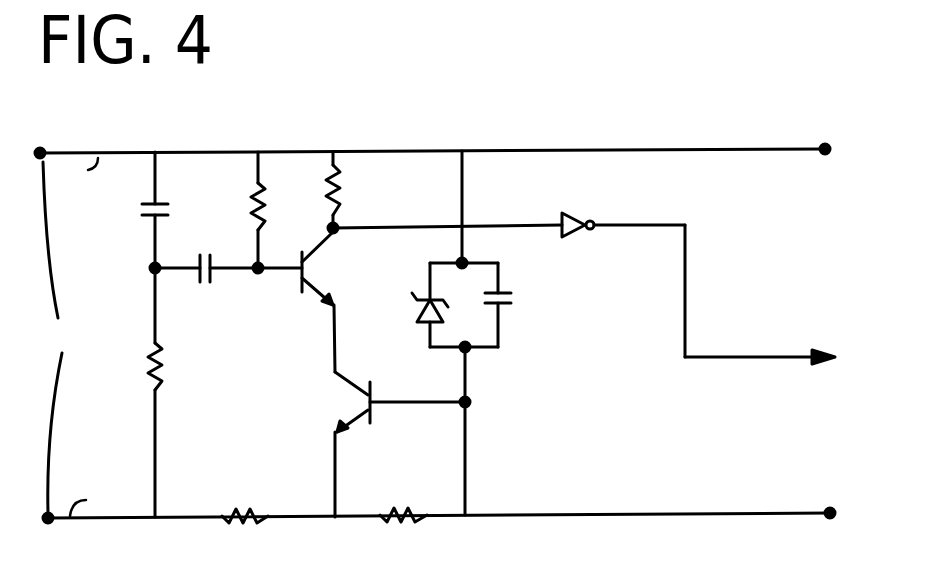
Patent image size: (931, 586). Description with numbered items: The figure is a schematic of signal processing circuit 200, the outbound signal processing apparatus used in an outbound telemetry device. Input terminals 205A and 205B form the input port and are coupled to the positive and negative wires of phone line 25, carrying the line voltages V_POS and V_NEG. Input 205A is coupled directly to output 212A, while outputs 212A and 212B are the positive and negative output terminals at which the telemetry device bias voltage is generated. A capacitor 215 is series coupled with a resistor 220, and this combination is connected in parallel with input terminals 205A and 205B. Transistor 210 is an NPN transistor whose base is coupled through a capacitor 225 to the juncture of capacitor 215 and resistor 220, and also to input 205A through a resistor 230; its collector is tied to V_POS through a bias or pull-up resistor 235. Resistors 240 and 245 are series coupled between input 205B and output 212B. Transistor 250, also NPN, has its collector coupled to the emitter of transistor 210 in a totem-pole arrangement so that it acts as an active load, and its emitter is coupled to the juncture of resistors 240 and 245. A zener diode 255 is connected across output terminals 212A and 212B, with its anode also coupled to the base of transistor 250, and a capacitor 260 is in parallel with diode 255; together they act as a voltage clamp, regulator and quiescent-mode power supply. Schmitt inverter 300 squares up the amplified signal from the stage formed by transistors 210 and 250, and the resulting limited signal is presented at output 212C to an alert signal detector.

The signal processing circuit 200 is at (500, 105).
The phone line 25 is at (62, 337).
The input terminal 205A is at (44, 150).
The input terminal 205B is at (50, 522).
The output terminal 212A is at (822, 147).
The output terminal 212B is at (827, 511).
The output 212C is at (810, 355).
The capacitor 215 is at (150, 218).
The resistor 220 is at (148, 372).
The capacitor 225 is at (213, 279).
The resistor 230 is at (254, 210).
The bias or pull-up resistor 235 is at (330, 195).
The resistor 240 is at (255, 508).
The resistor 245 is at (415, 508).
The transistor 210 is at (320, 298).
The transistor 250 is at (347, 386).
The zener diode 255 is at (420, 306).
The capacitor 260 is at (507, 292).
The inverter 300 is at (566, 212).